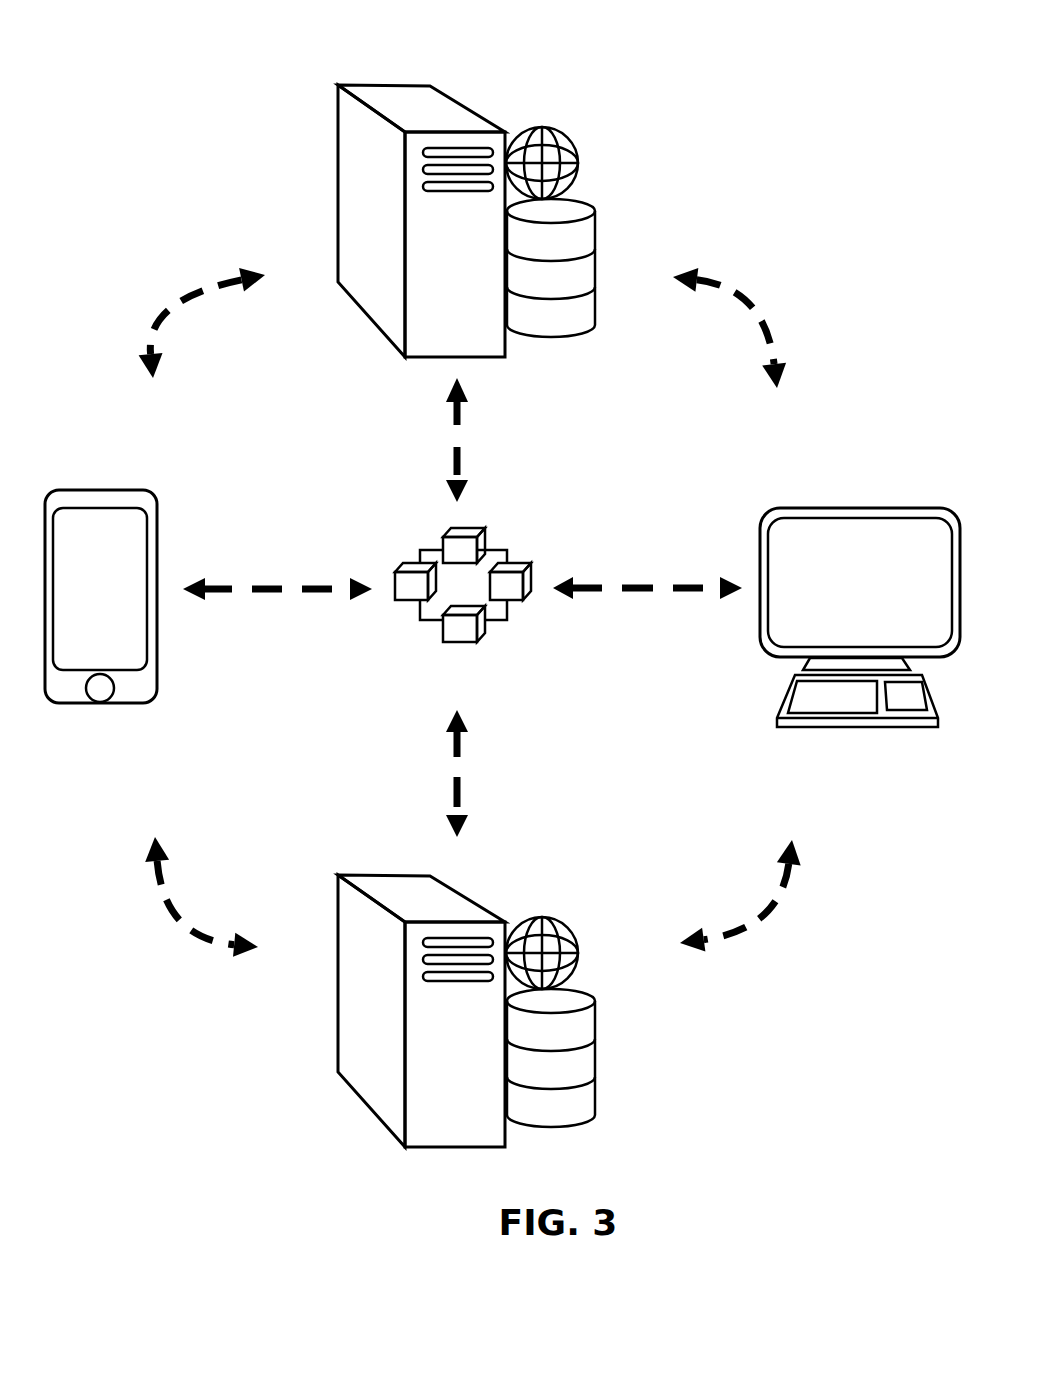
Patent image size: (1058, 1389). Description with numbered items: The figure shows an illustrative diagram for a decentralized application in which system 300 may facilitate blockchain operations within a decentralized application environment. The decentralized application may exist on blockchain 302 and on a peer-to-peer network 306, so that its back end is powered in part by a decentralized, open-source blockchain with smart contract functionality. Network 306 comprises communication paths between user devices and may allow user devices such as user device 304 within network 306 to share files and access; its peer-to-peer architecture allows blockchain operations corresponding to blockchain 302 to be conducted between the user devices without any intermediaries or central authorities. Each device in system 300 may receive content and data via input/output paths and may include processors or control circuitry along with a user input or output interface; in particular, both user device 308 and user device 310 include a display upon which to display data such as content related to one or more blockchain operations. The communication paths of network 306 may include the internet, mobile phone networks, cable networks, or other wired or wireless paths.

The system 300 is at (527, 31).
The blockchain 302 is at (512, 658).
The user device 304 is at (559, 370).
The network 306 is at (185, 275).
The user device 308 is at (142, 728).
The user device 310 is at (752, 684).